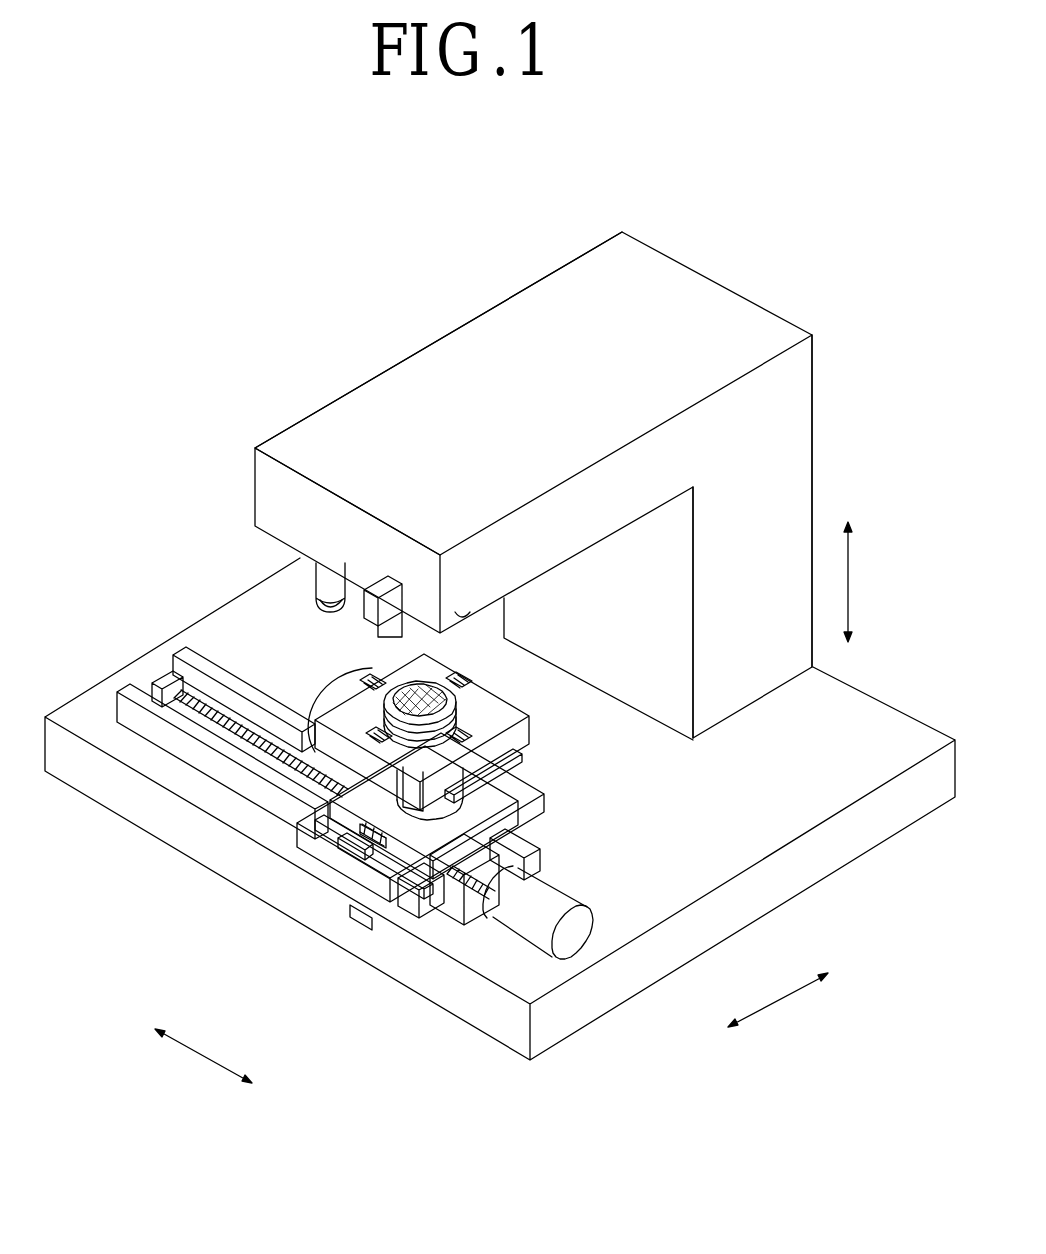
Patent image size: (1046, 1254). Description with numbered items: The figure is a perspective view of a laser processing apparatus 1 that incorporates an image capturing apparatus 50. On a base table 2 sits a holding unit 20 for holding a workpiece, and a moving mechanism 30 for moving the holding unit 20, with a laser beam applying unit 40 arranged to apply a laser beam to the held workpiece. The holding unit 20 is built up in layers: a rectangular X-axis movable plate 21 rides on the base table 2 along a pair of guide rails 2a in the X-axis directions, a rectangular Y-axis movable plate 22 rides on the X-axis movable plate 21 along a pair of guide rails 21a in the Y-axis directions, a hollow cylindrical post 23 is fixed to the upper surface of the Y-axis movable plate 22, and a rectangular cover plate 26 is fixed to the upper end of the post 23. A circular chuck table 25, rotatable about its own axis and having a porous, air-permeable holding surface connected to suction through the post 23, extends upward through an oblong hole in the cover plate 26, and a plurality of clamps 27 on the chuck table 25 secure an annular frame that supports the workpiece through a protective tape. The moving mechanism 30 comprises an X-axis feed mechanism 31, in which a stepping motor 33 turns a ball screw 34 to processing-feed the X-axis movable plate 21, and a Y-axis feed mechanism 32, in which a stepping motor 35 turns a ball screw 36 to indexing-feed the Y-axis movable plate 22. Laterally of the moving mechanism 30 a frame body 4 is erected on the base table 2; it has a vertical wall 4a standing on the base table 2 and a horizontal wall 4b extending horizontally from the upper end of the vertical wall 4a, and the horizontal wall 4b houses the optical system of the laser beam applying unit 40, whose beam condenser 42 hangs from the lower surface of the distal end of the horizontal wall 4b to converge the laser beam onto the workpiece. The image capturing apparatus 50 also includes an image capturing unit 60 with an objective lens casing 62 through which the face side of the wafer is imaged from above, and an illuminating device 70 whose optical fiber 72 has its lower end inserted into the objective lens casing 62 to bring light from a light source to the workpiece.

The laser processing apparatus 1 is at (176, 523).
The base table 2 is at (755, 832).
The guide rails 2a is at (134, 682).
The frame body 4 is at (850, 429).
The vertical wall 4a is at (787, 497).
The horizontal wall 4b is at (598, 503).
The holding unit 20 is at (118, 891).
The X-axis movable plate 21 is at (345, 912).
The guide rails 21a is at (312, 840).
The Y-axis movable plate 22 is at (442, 912).
The post 23 is at (405, 902).
The chuck table 25 is at (300, 790).
The cover plate 26 is at (380, 884).
The clamps 27 is at (275, 728).
The moving mechanism 30 is at (667, 767).
The X-axis feed mechanism 31 is at (617, 827).
The Y-axis feed mechanism 32 is at (617, 753).
The stepping motor 33 is at (540, 888).
The ball screw 34 is at (524, 840).
The stepping motor 35 is at (508, 760).
The ball screw 36 is at (548, 797).
The laser beam applying unit 40 is at (310, 577).
The beam condenser 42 is at (318, 600).
The image capturing apparatus 50 is at (460, 612).
The image capturing unit 60 is at (426, 616).
The objective lens casing 62 is at (392, 632).
The illuminating device 70 is at (360, 620).
The optical fiber 72 is at (360, 638).